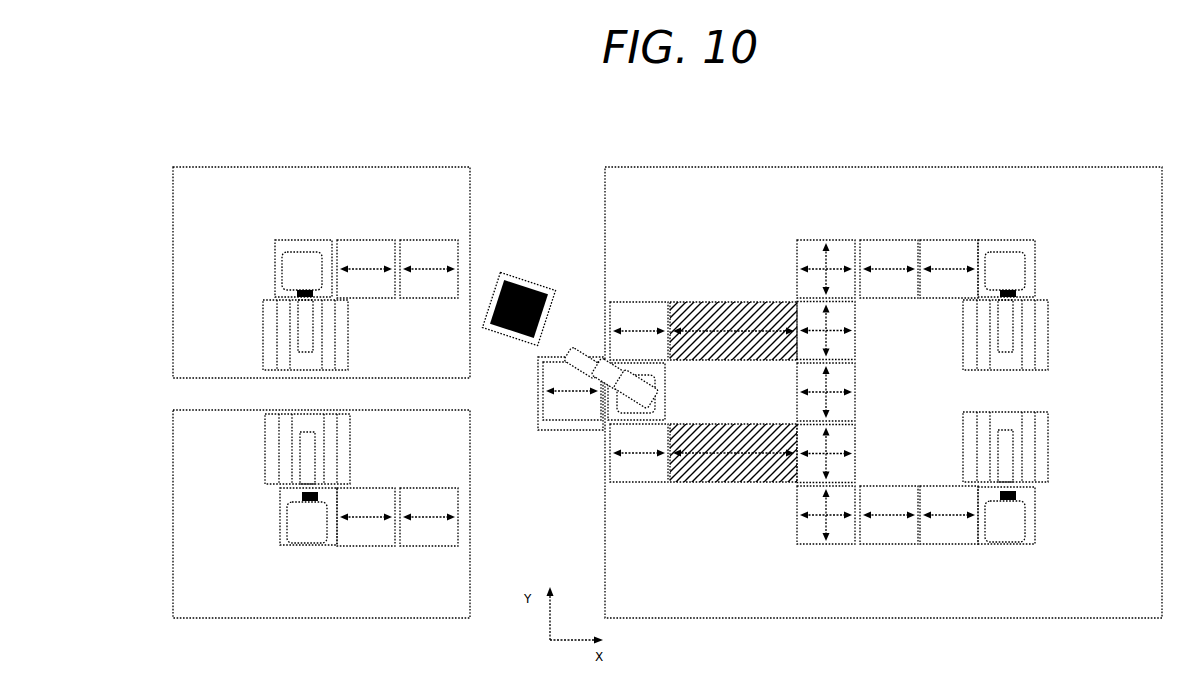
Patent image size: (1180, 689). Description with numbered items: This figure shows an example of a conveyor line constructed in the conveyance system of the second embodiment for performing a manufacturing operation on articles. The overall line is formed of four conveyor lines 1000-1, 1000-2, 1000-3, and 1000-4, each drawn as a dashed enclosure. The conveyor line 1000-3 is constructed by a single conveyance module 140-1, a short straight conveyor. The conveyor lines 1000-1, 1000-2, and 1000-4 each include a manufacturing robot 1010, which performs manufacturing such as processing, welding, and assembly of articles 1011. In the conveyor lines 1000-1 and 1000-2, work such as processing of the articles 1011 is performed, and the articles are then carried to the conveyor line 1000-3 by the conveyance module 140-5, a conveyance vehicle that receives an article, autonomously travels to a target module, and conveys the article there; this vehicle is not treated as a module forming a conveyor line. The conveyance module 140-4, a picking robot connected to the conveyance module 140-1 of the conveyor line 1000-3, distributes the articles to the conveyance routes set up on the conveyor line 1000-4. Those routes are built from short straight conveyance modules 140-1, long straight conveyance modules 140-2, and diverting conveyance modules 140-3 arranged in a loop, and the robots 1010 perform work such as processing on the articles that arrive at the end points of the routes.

The conveyor line 1000-1 is at (326, 264).
The conveyor line 1000-2 is at (325, 502).
The conveyor line 1000-3 is at (540, 406).
The conveyor line 1000-4 is at (883, 384).
The conveyance module 140-1 is at (919, 379).
The conveyance module 140-2 is at (703, 379).
The conveyance module 140-3 is at (826, 379).
The conveyance module 140-4 is at (643, 383).
The conveyance module 140-5 is at (537, 307).
The manufacturing robot 1010 is at (1020, 373).
The article 1011 is at (996, 379).